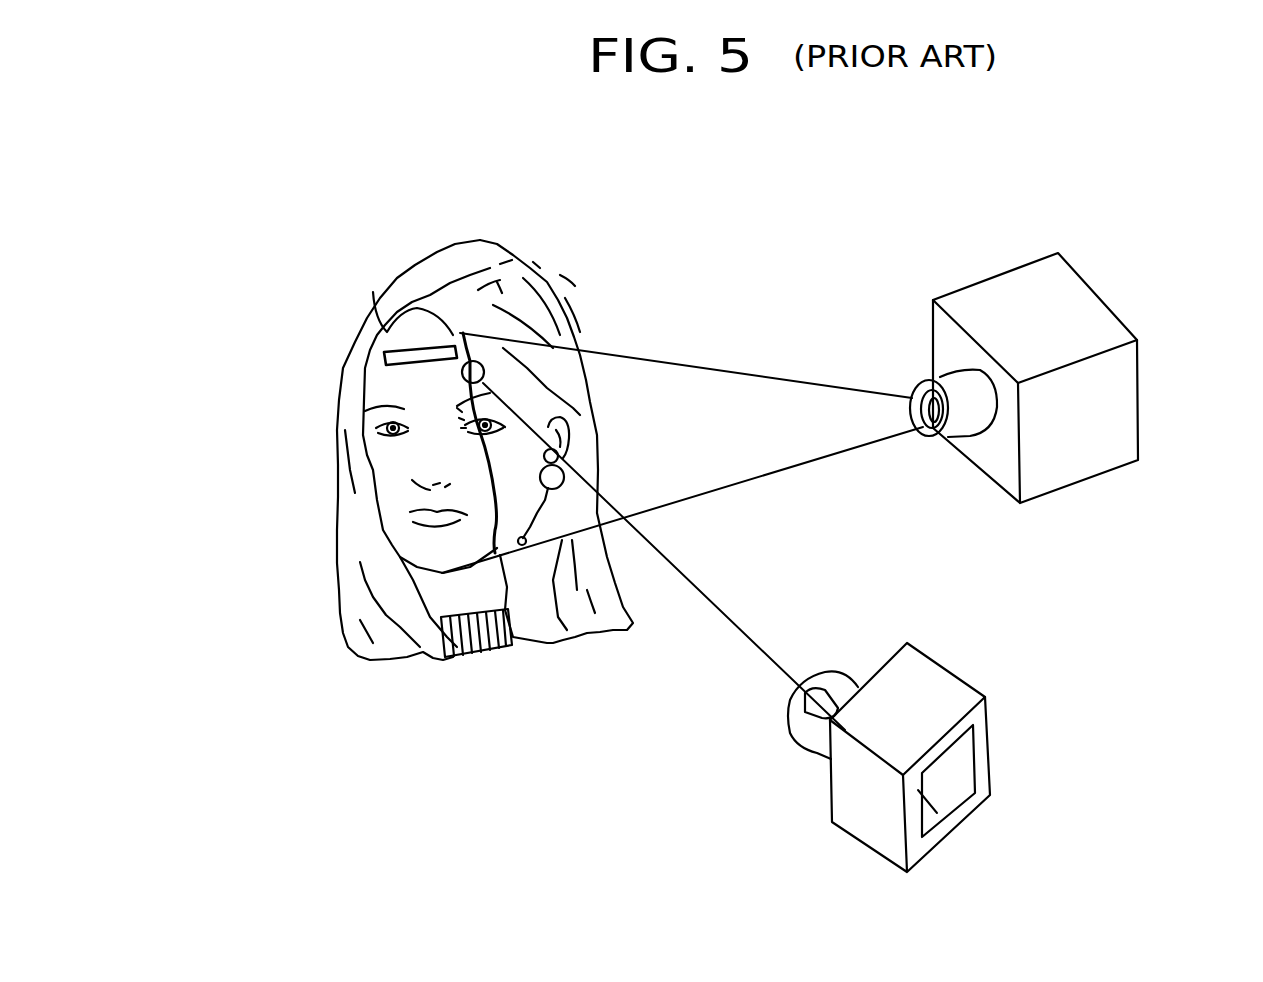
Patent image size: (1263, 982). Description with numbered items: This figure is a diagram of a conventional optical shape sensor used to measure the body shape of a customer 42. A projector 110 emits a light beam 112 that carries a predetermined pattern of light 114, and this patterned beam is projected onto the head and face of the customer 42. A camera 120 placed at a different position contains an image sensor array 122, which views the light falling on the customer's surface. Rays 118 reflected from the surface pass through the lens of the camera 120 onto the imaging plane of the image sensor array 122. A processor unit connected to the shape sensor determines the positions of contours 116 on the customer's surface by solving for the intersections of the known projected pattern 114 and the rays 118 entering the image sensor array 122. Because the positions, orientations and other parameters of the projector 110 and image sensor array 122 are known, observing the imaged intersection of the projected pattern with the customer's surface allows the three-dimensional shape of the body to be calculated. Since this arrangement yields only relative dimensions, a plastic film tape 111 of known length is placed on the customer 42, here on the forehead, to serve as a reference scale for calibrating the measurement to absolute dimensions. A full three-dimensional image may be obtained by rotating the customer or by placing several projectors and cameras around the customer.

The customer 42 is at (483, 258).
The plastic film tape 111 is at (385, 333).
The contours 116 is at (450, 369).
The pattern of light 114 is at (713, 415).
The light beam 112 is at (830, 425).
The projector 110 is at (1055, 483).
The rays 118 is at (732, 637).
The camera 120 is at (882, 842).
The image sensor array 122 is at (987, 748).